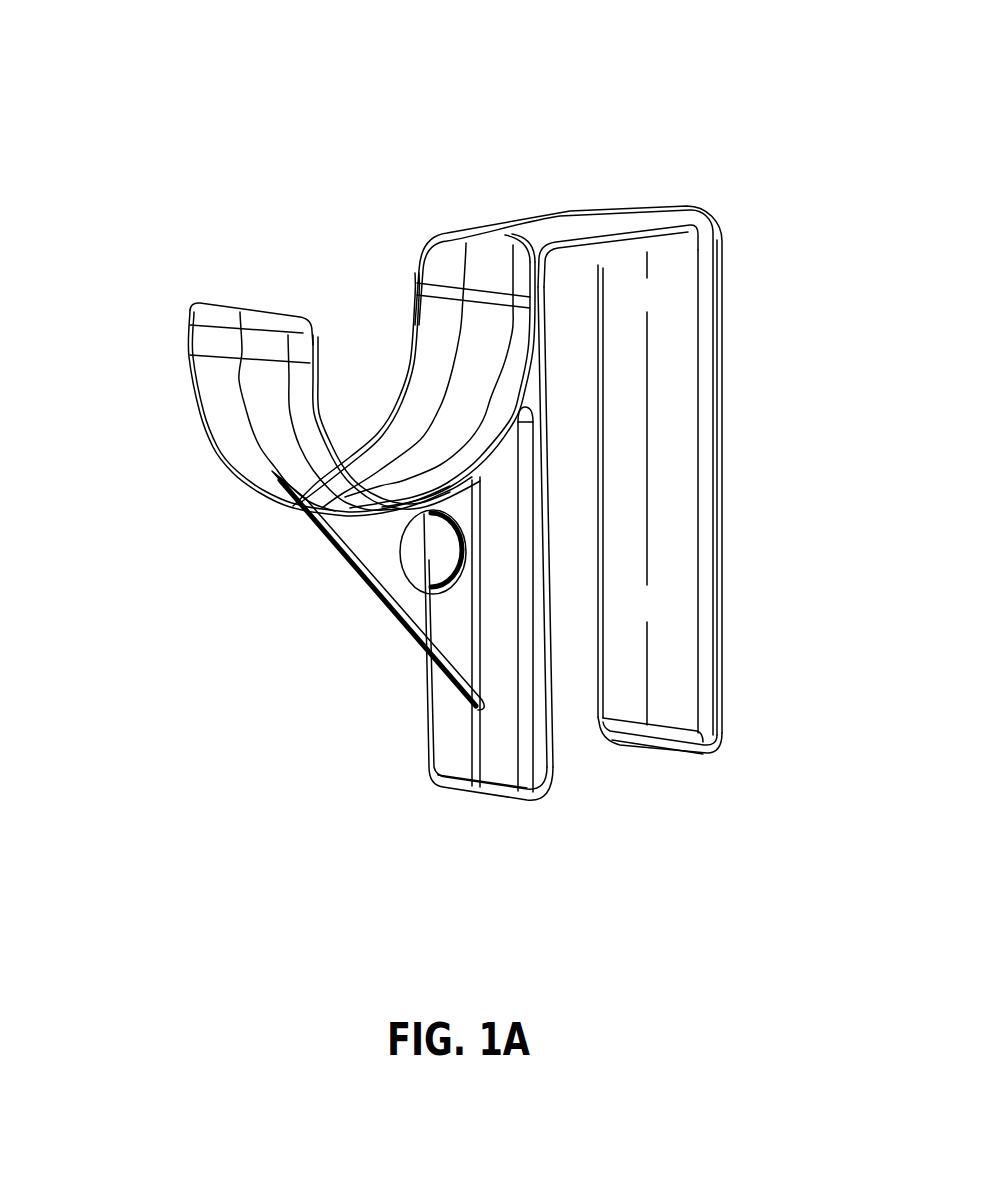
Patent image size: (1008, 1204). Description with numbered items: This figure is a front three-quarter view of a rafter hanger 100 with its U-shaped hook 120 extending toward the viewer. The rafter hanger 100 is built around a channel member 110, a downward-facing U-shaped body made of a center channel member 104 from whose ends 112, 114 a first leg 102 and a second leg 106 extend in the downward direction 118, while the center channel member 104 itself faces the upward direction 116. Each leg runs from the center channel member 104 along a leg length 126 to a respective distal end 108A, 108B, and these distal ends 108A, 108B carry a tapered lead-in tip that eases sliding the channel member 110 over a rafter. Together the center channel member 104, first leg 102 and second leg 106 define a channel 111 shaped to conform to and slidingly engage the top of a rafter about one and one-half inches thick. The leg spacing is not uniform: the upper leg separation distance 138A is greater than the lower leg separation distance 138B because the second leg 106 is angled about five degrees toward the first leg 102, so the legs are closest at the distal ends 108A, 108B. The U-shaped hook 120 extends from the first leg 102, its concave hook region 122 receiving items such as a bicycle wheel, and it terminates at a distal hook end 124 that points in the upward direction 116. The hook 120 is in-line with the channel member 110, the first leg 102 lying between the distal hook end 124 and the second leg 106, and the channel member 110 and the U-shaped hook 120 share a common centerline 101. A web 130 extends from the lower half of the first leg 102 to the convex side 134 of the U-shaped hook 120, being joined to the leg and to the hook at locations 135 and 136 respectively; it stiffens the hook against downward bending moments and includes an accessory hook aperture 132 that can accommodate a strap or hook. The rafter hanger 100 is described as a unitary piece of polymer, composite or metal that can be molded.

The rafter hanger 100 is at (533, 46).
The common centerline 101 is at (550, 213).
The first leg 102 is at (475, 728).
The center channel member 104 is at (583, 203).
The second leg 106 is at (728, 672).
The first leg distal end 108A is at (463, 795).
The second leg distal end 108B is at (680, 756).
The channel member 110 is at (675, 621).
The channel 111 is at (607, 812).
The first center channel member end 112 is at (420, 262).
The center channel member end 114 is at (710, 222).
The upward direction 116 is at (128, 790).
The downward direction 118 is at (131, 816).
The U-shaped hook 120 is at (185, 333).
The concave hook region 122 is at (362, 315).
The distal hook end 124 is at (283, 305).
The first leg length 126 is at (545, 347).
The web 130 is at (372, 551).
The accessory hook aperture 132 is at (447, 547).
The convex side 134 is at (218, 408).
The web-to-leg joining location 135 is at (300, 513).
The web-to-hook joining location 136 is at (487, 513).
The upper leg separation distance 138A is at (682, 254).
The lower leg separation distance 138B is at (685, 733).